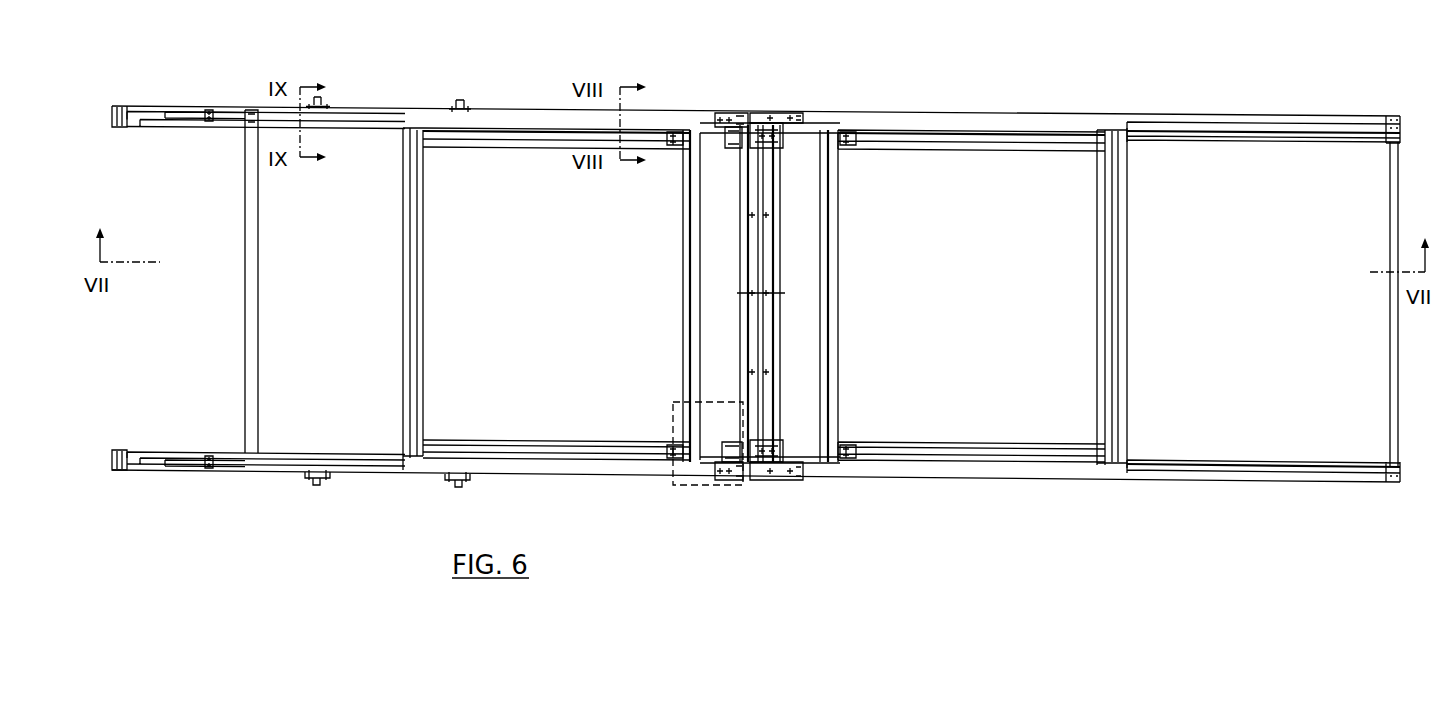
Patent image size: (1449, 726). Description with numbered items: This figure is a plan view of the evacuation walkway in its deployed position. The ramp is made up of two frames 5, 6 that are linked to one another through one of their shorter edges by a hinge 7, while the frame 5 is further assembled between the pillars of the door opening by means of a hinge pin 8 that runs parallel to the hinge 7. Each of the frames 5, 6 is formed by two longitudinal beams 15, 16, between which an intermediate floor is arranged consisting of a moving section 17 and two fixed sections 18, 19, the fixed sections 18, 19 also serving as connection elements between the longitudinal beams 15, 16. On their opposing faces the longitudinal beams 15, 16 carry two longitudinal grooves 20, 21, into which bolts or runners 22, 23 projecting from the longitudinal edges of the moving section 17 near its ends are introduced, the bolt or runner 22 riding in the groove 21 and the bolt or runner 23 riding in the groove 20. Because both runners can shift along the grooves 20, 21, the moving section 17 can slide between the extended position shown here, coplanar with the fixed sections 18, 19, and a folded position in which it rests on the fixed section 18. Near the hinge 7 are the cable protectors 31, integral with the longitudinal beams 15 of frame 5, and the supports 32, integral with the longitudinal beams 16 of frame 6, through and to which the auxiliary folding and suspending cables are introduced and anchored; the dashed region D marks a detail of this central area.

The frame 5 is at (550, 90).
The frame 6 is at (1182, 96).
The hinge 7 is at (759, 93).
The hinge pin 8 is at (121, 96).
The longitudinal beam 15 is at (150, 104).
The longitudinal beam 16 is at (1310, 122).
The moving section 17 is at (570, 284).
The fixed section 18 is at (337, 280).
The fixed section 19 is at (737, 286).
The longitudinal groove 20 is at (505, 128).
The longitudinal groove 21 is at (362, 118).
The bolt or runner 22 is at (421, 127).
The bolt or runner 23 is at (692, 130).
The cable protector 31 is at (727, 112).
The support 32 is at (793, 115).
The detail region D is at (700, 490).